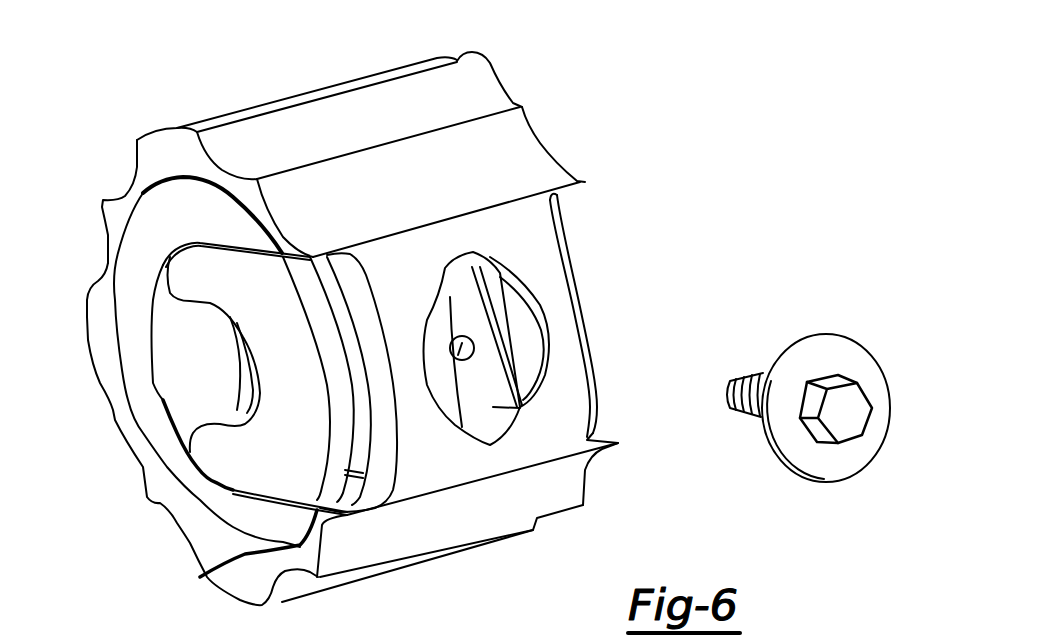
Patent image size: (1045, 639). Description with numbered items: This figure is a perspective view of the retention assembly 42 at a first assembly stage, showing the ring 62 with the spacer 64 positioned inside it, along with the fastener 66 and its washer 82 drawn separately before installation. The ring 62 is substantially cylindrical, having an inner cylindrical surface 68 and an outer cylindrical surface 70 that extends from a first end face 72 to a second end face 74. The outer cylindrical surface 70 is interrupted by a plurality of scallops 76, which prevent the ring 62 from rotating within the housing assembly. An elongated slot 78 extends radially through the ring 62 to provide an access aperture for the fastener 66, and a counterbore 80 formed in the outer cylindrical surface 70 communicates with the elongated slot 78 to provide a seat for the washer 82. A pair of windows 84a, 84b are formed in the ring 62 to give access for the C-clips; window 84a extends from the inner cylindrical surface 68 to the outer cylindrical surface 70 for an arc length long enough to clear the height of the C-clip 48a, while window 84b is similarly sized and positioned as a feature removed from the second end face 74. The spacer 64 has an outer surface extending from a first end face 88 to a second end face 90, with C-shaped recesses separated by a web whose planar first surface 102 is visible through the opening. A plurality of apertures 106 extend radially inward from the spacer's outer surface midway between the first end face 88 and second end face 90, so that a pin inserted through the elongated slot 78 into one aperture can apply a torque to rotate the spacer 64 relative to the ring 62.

The retention assembly 42 is at (183, 62).
The ring 62 is at (139, 142).
The spacer 64 is at (155, 213).
The fastener 66 is at (852, 405).
The inner cylindrical surface 68 is at (204, 575).
The outer cylindrical surface 70 is at (353, 78).
The first end face 72 is at (100, 310).
The second end face 74 is at (482, 56).
The scallops 76 is at (517, 155).
The elongated slot 78 is at (477, 264).
The counterbore 80 is at (523, 335).
The washer 82 is at (771, 370).
The window 84a is at (386, 422).
The window 84b is at (595, 407).
The first end face 88 is at (145, 427).
The second end face 90 is at (587, 267).
The first surface 102 is at (250, 362).
The apertures 106 is at (463, 347).
The C-clip 48a is at (262, 466).